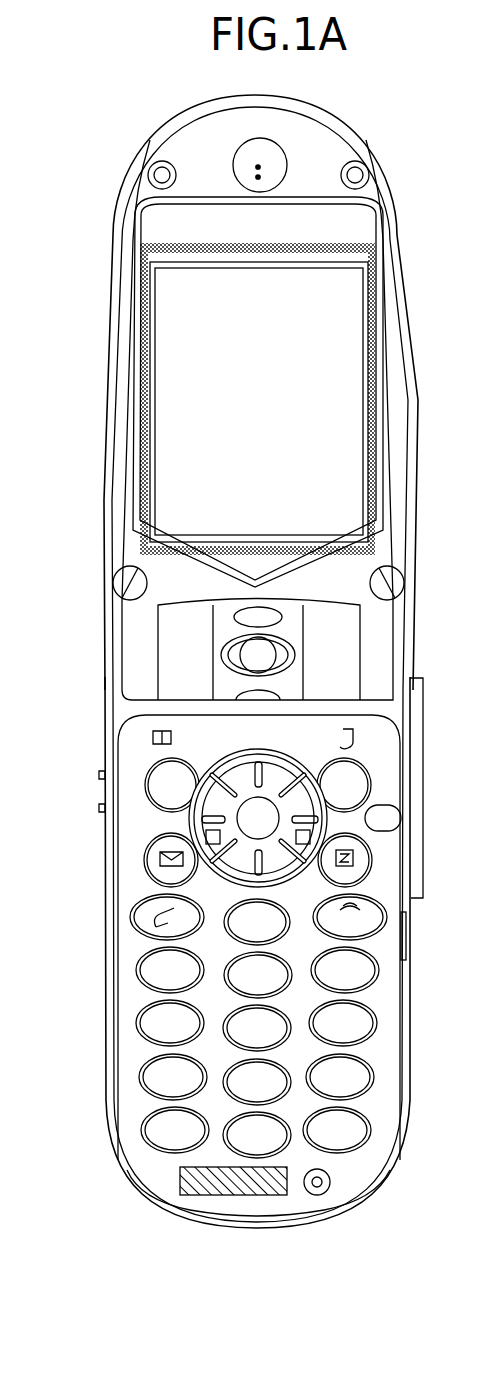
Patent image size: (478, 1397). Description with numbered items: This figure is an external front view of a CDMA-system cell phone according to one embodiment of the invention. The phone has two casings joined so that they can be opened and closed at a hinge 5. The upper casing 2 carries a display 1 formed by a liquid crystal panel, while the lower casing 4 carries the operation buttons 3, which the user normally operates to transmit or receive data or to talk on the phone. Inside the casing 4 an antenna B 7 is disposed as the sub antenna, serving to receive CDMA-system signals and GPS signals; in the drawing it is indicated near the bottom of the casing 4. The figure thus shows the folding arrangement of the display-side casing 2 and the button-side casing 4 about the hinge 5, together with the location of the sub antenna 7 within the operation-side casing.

The display 1 is at (175, 403).
The casing 2 is at (120, 190).
The operation buttons 3 is at (148, 1028).
The casing 4 is at (103, 890).
The hinge 5 is at (103, 628).
The antenna B 7 is at (242, 1185).